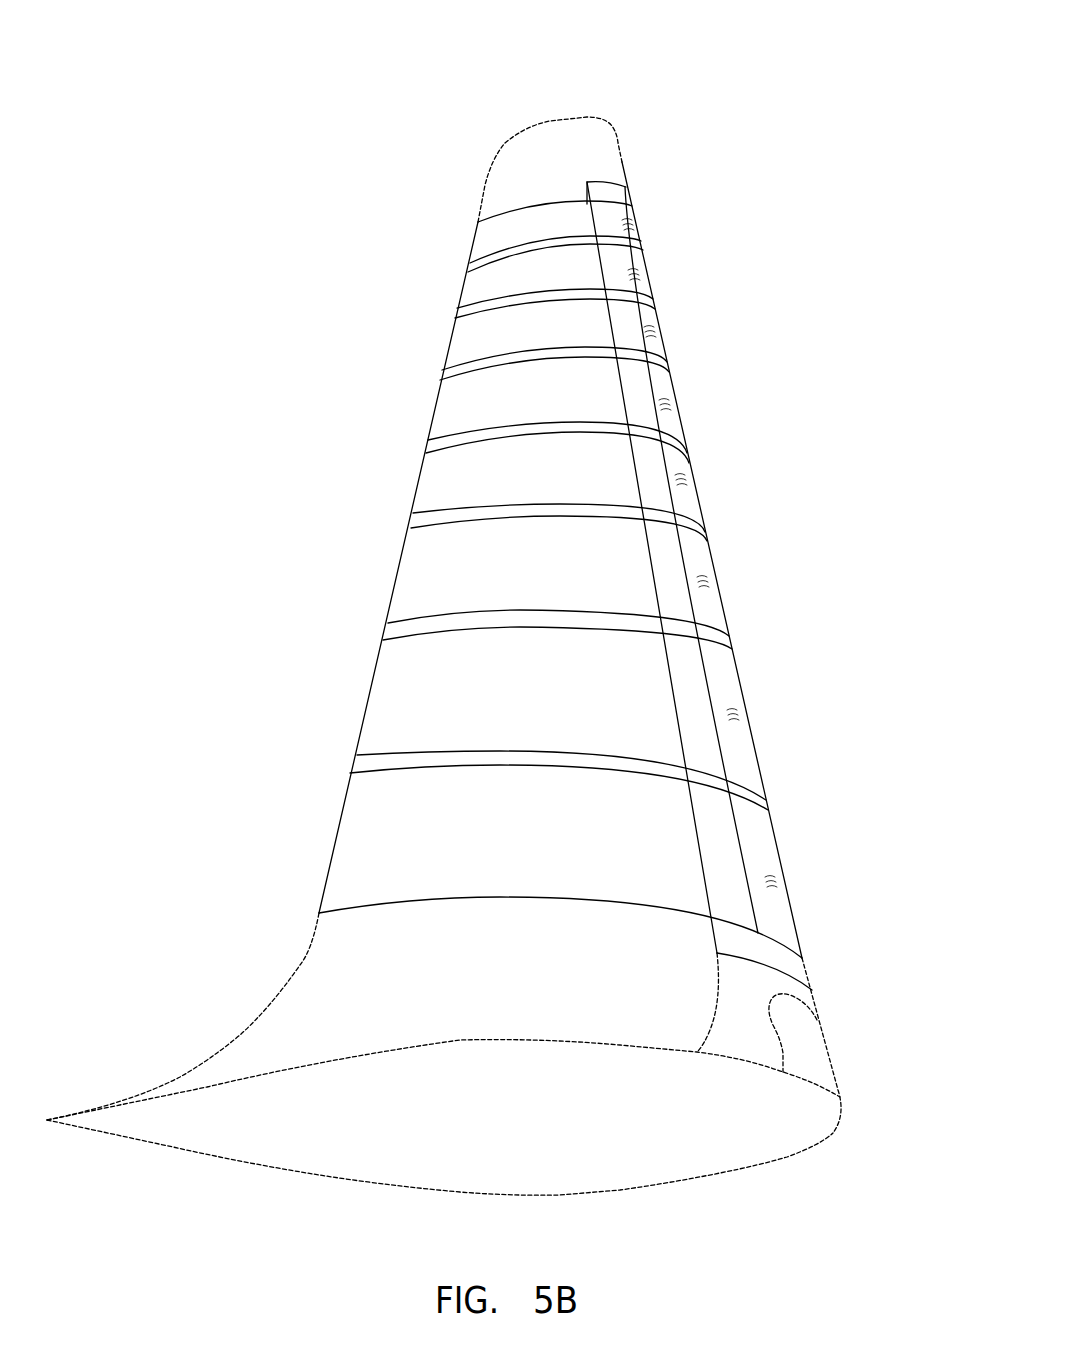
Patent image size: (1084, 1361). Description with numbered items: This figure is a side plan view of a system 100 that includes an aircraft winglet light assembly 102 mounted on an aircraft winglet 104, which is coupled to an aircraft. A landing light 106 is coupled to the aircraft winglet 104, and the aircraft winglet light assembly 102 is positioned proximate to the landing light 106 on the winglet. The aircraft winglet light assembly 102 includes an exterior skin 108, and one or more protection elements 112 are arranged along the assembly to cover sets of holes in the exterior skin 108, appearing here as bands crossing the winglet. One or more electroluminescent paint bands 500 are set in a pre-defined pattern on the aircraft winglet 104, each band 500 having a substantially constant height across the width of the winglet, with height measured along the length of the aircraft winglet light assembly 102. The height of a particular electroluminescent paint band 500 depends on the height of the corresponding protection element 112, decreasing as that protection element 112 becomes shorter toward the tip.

The system 100 is at (262, 103).
The aircraft winglet light assembly 102 is at (828, 650).
The aircraft winglet 104 is at (346, 1013).
The landing light 106 is at (807, 1040).
The exterior skin 108 is at (608, 188).
The protection element 112 is at (642, 258).
The electroluminescent paint band 500 is at (482, 280).